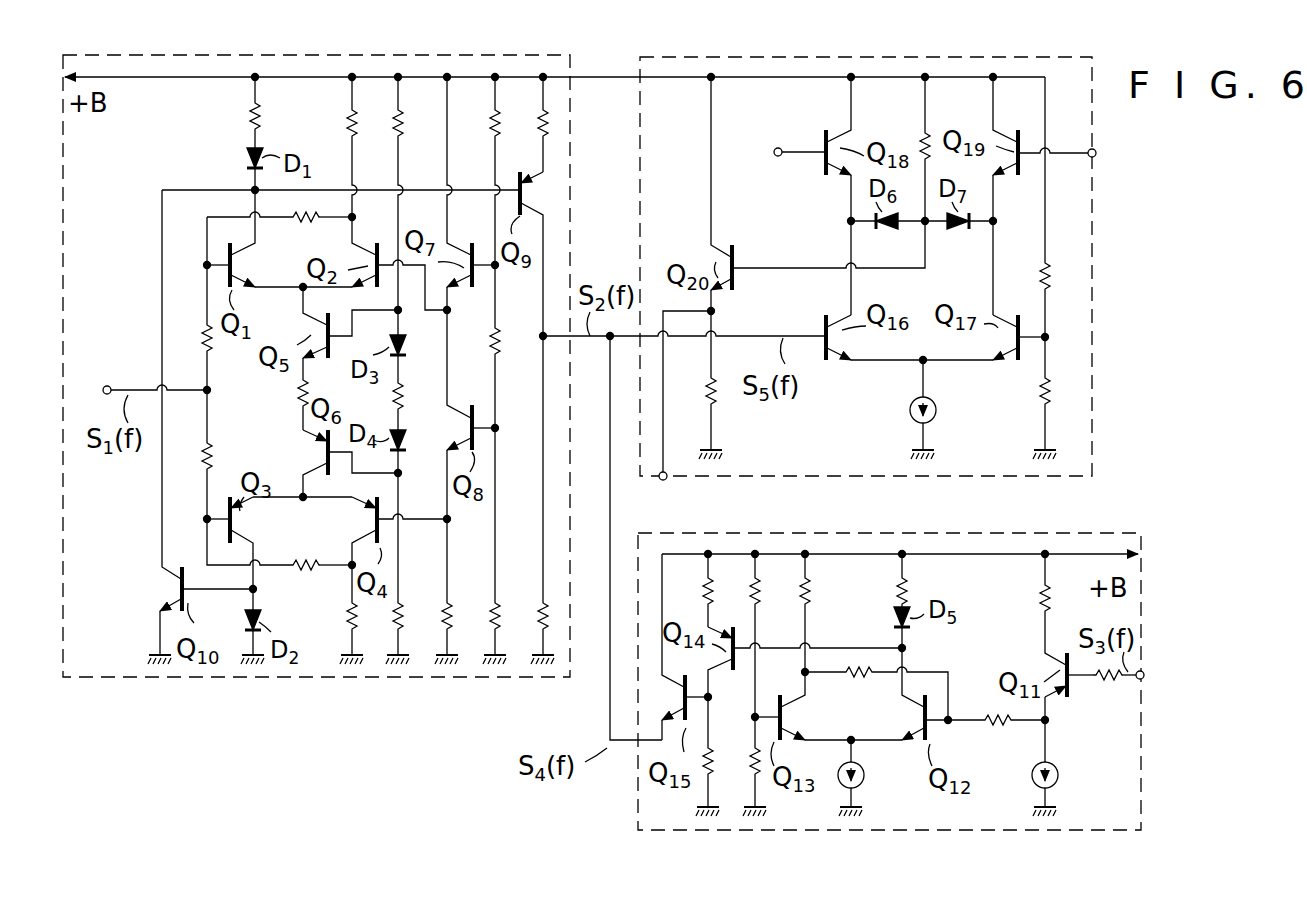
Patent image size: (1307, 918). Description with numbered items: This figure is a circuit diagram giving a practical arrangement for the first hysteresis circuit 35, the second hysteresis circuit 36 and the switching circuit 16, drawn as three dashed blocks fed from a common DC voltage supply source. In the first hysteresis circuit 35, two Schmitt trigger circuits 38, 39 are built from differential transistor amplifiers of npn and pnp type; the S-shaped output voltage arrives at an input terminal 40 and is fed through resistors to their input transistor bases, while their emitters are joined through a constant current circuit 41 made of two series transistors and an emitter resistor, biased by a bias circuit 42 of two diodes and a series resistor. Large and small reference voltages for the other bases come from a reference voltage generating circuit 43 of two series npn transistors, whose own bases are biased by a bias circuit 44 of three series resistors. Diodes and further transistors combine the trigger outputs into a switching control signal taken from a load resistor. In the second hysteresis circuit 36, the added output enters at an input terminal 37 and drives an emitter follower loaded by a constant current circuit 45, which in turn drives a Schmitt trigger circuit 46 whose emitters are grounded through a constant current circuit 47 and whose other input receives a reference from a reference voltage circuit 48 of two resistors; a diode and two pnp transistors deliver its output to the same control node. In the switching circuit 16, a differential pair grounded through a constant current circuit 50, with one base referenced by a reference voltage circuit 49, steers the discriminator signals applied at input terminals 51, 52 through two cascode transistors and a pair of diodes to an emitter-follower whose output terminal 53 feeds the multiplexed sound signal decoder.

The switching circuit 16 is at (1140, 476).
The first hysteresis circuit 35 is at (263, 678).
The second hysteresis circuit 36 is at (1194, 616).
The input terminal 37 is at (1144, 679).
The Schmitt trigger circuit 38 is at (294, 256).
The Schmitt trigger circuit 39 is at (314, 549).
The input terminal 40 is at (107, 388).
The constant current circuit 41 is at (276, 414).
The bias circuit 42 is at (440, 412).
The reference voltage generating circuit 43 is at (487, 379).
The bias circuit 44 is at (535, 397).
The constant current circuit (load) 45 is at (1058, 780).
The Schmitt trigger circuit 46 is at (868, 726).
The constant current circuit 47 is at (864, 780).
The reference voltage circuit 48 is at (748, 720).
The reference voltage circuit 49 is at (1083, 356).
The constant current circuit 50 is at (910, 414).
The input terminal 51 is at (774, 150).
The input terminal 52 is at (1096, 157).
The output terminal 53 is at (665, 481).